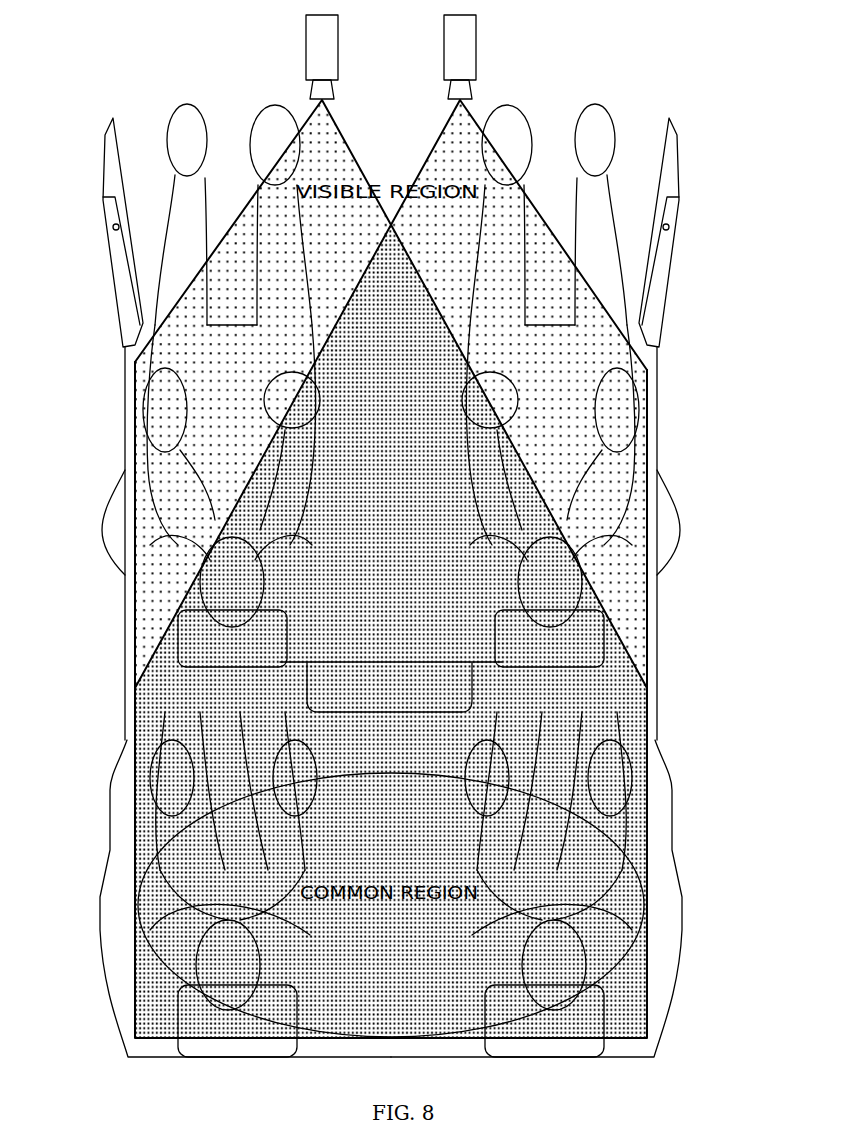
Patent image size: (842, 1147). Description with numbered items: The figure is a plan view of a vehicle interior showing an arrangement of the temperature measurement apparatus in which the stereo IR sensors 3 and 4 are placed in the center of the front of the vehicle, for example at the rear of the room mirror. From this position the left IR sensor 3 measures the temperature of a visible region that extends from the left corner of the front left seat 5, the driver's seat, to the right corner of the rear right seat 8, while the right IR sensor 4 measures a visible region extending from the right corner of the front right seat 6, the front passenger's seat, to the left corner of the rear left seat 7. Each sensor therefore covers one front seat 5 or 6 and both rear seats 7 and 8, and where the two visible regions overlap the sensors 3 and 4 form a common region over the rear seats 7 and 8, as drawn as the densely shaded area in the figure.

The left IR sensor 3 is at (306, 43).
The right IR sensor 4 is at (477, 50).
The front left seat 5 is at (137, 349).
The front right seat 6 is at (548, 341).
The rear left seat 7 is at (132, 738).
The rear right seat 8 is at (648, 746).